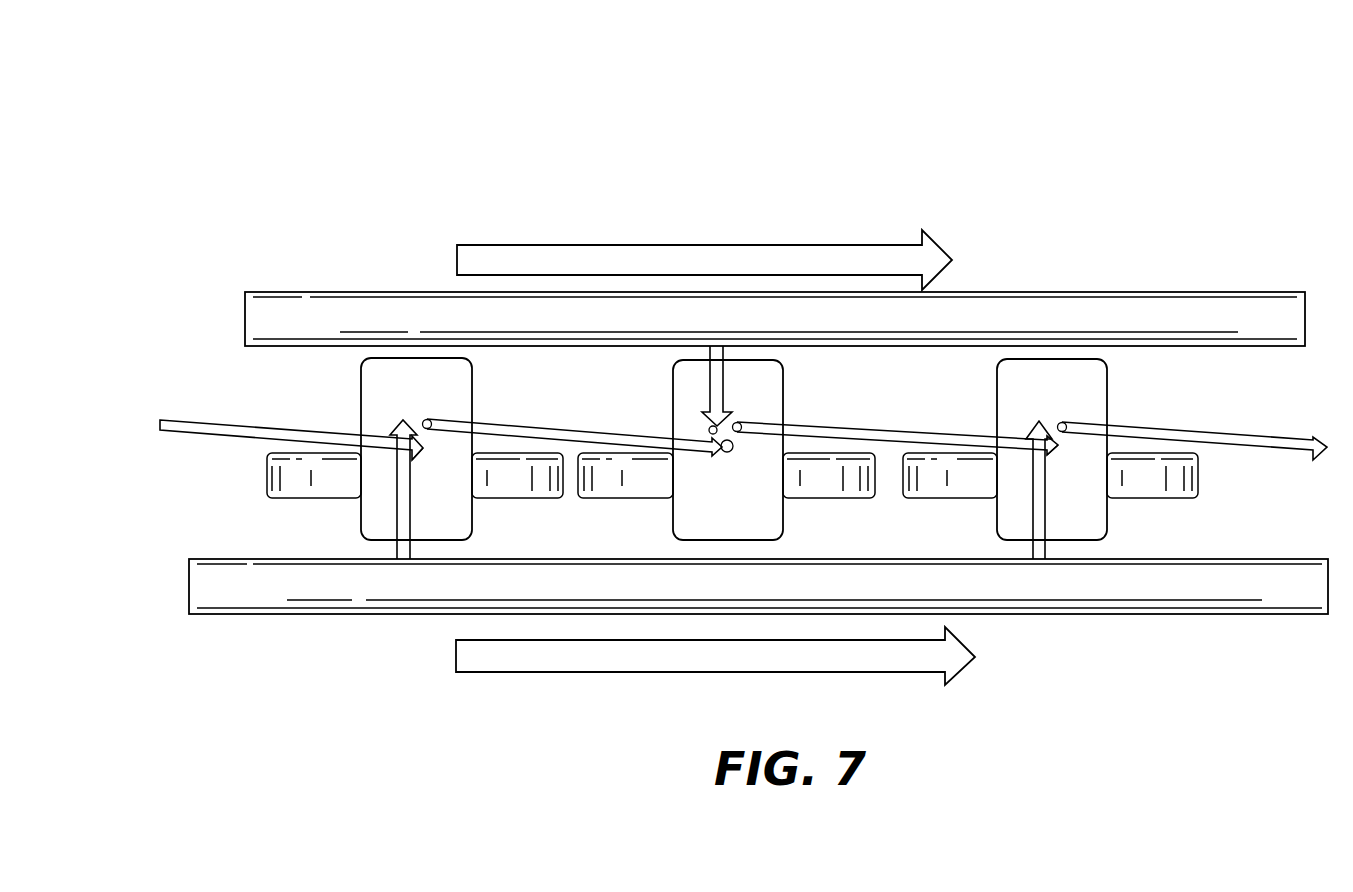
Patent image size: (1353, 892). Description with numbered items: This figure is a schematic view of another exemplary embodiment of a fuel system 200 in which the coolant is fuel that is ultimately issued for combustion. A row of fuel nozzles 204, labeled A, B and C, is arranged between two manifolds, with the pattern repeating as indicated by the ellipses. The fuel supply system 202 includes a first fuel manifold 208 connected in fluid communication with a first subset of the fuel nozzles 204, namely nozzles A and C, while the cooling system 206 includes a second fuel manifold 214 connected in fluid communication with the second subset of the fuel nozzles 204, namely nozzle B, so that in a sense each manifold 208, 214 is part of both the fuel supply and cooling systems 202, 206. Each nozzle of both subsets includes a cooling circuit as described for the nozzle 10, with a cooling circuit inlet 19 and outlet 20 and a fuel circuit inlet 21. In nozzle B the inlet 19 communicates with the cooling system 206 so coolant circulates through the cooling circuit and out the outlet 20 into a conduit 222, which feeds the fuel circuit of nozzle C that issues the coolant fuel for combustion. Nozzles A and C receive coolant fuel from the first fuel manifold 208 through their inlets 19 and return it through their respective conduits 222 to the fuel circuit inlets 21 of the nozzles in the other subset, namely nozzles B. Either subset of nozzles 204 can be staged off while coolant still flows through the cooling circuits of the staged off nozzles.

The system 200 is at (205, 170).
The cooling system 206 is at (145, 282).
The second fuel manifold 214 is at (317, 318).
The fuel nozzles 204 is at (145, 365).
The fuel supply system 202 is at (145, 550).
The first fuel manifold 208 is at (302, 587).
The nozzle 10 is at (506, 418).
The inlet 19 is at (403, 420).
The outlet 20 is at (428, 419).
The fuel circuit inlet 21 is at (420, 442).
The conduit 222 is at (880, 446).